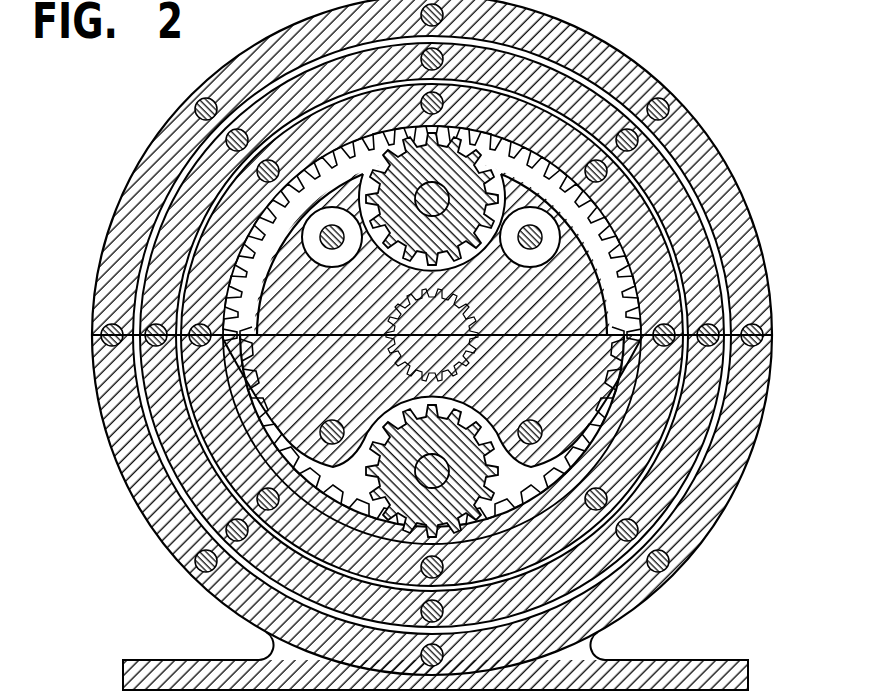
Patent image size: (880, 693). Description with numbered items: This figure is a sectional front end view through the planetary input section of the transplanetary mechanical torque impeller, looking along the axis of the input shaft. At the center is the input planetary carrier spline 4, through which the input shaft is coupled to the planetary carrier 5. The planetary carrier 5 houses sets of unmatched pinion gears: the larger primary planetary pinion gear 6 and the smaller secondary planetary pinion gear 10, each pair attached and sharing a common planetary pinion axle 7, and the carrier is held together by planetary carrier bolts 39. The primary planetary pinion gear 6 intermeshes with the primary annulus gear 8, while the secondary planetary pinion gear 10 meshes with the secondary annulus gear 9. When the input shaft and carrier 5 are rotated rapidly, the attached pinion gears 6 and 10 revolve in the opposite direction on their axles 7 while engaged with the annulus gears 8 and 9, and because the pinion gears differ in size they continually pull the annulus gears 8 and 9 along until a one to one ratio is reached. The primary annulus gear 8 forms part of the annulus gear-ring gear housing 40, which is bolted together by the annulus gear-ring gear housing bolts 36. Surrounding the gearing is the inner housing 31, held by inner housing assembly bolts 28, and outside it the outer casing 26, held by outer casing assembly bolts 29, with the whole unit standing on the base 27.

The input planetary carrier spline 4 is at (452, 352).
The planetary carrier 5 is at (305, 193).
The primary planetary pinion gear 6 is at (378, 172).
The planetary pinion axle 7 is at (414, 194).
The primary annulus gear 8 is at (588, 292).
The secondary annulus gear 9 is at (613, 372).
The secondary planetary pinion gear 10 is at (386, 470).
The outer casing 26 is at (632, 606).
The base 27 is at (598, 657).
The inner housing assembly bolt 28 is at (214, 519).
The outer casing assembly bolt 29 is at (189, 561).
The inner housing 31 is at (700, 423).
The annulus gear-ring gear housing bolt 36 is at (206, 313).
The planetary carrier bolt 39 is at (552, 283).
The annulus gear-ring gear housing 40 is at (667, 385).